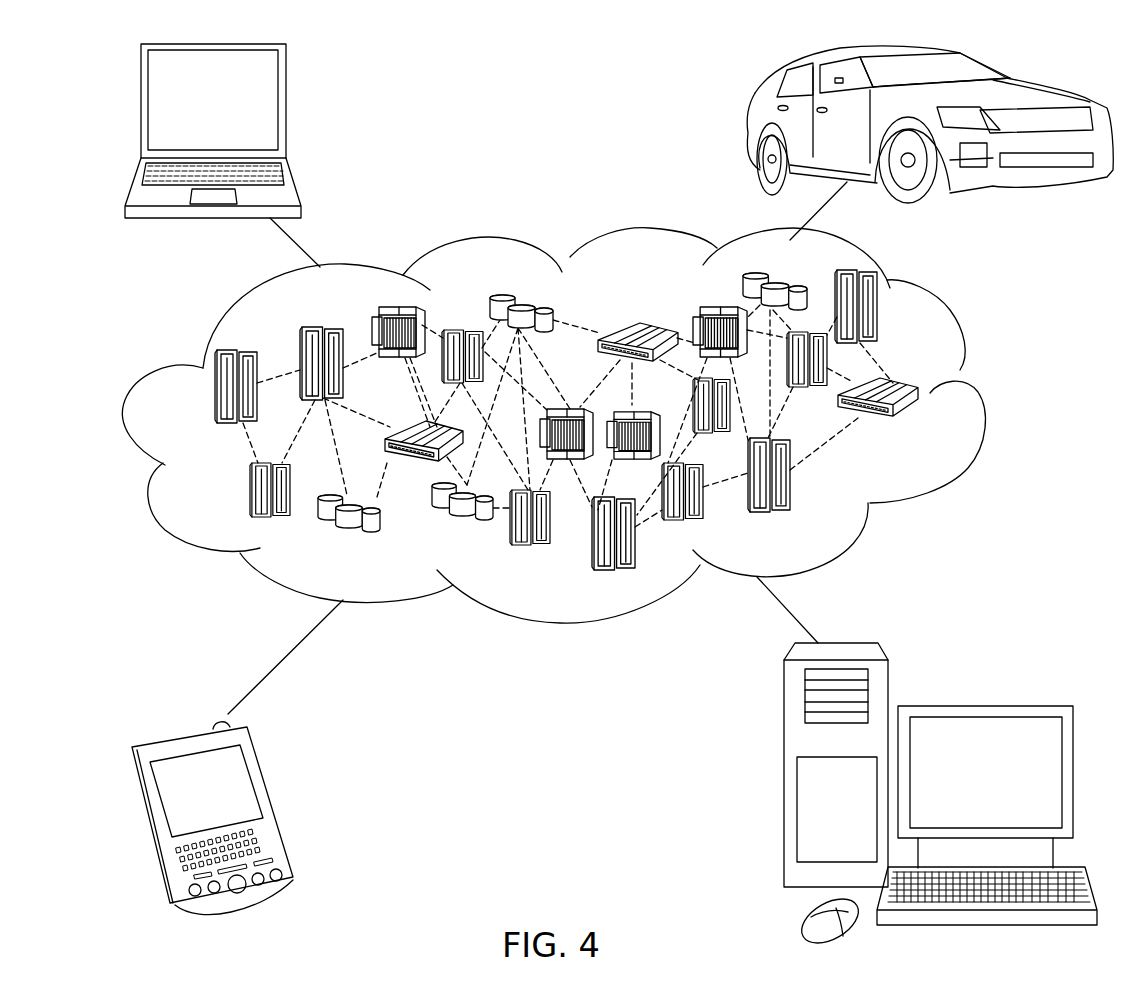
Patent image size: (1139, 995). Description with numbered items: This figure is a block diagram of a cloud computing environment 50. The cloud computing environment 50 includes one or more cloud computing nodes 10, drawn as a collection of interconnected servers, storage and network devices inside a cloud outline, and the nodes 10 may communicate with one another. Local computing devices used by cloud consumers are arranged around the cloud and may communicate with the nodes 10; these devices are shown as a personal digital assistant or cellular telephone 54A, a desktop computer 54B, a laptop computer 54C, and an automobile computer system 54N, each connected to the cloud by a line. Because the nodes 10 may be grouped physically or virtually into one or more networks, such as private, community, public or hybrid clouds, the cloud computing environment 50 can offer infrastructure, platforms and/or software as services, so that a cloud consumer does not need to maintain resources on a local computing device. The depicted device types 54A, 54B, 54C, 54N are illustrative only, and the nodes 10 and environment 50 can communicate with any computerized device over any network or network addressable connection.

The cloud computing nodes 10 is at (928, 432).
The cloud computing environment 50 is at (985, 398).
The personal digital assistant (PDA) or cellular telephone 54A is at (274, 801).
The desktop computer 54B is at (981, 703).
The laptop computer 54C is at (286, 109).
The automobile computer system 54N is at (748, 124).